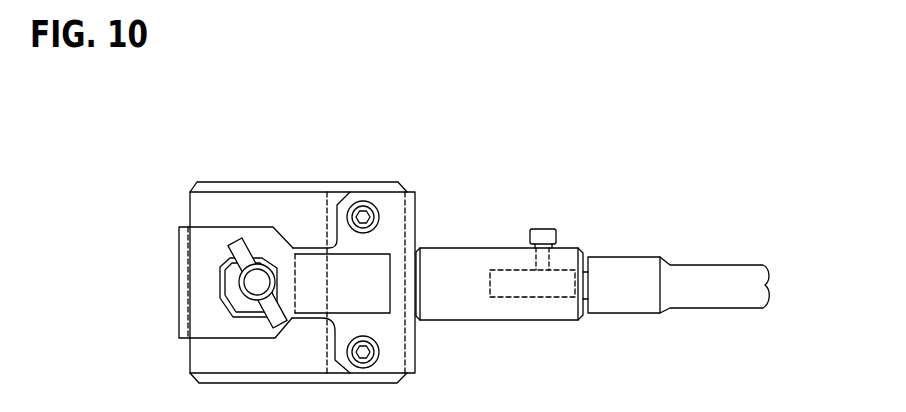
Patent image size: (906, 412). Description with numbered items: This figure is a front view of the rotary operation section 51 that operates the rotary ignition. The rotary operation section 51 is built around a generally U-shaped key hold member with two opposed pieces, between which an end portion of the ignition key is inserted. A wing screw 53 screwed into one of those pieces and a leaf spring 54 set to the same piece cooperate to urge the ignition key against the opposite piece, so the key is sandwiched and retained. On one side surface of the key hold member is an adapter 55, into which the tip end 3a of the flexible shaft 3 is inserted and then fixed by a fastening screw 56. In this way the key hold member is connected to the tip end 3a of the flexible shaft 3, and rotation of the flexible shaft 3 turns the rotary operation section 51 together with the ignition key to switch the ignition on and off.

The rotary operation section 51 is at (324, 148).
The wing screw 53 is at (242, 246).
The leaf spring 54 is at (203, 260).
The adapter 55 is at (452, 260).
The fastening screw 56 is at (538, 229).
The tip end of the flexible shaft 3a is at (560, 277).
The flexible shaft 3 is at (726, 240).